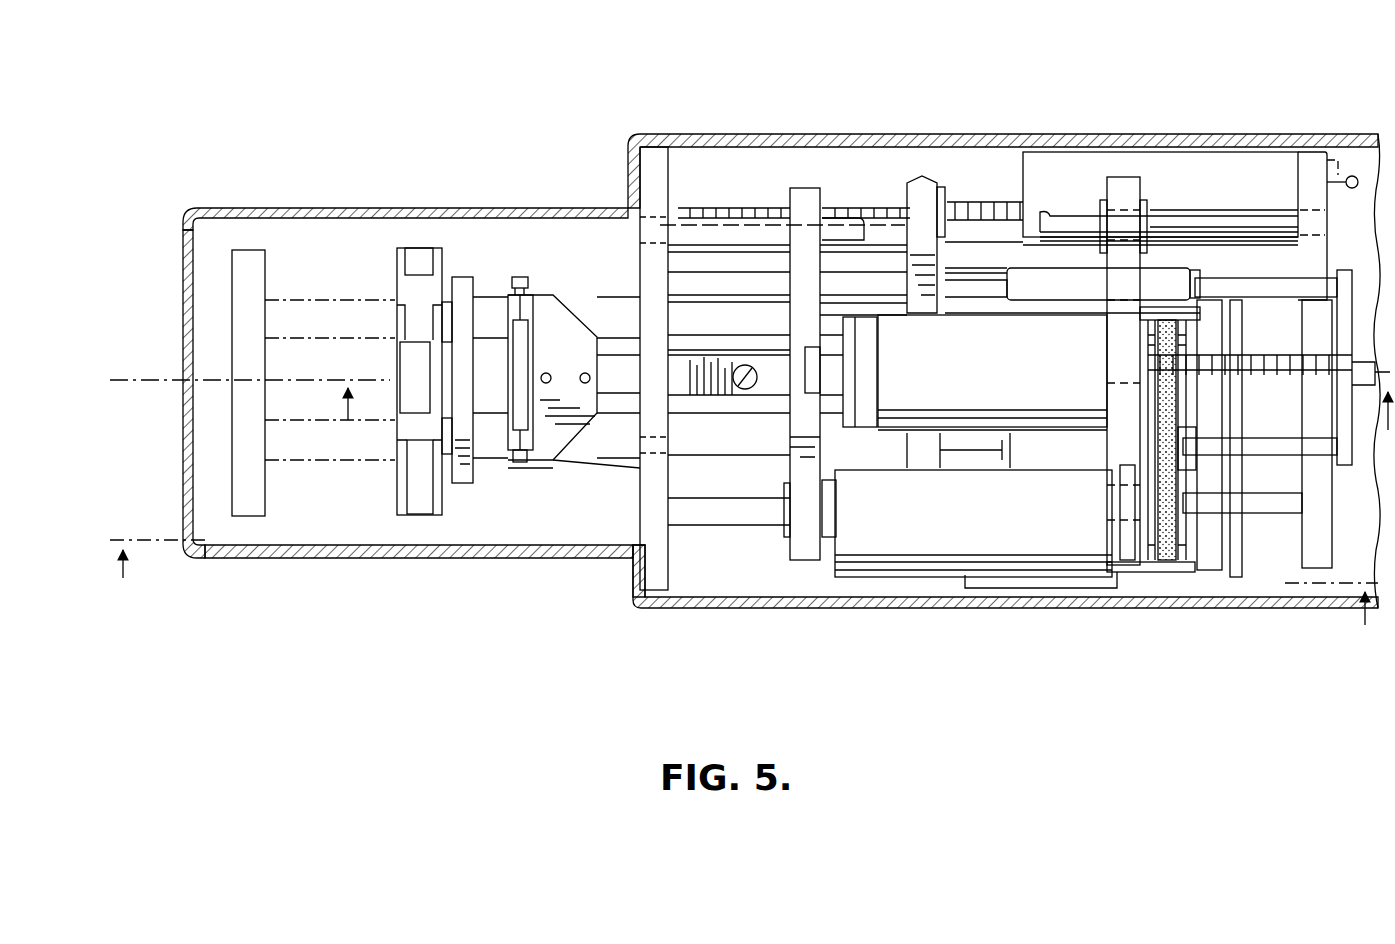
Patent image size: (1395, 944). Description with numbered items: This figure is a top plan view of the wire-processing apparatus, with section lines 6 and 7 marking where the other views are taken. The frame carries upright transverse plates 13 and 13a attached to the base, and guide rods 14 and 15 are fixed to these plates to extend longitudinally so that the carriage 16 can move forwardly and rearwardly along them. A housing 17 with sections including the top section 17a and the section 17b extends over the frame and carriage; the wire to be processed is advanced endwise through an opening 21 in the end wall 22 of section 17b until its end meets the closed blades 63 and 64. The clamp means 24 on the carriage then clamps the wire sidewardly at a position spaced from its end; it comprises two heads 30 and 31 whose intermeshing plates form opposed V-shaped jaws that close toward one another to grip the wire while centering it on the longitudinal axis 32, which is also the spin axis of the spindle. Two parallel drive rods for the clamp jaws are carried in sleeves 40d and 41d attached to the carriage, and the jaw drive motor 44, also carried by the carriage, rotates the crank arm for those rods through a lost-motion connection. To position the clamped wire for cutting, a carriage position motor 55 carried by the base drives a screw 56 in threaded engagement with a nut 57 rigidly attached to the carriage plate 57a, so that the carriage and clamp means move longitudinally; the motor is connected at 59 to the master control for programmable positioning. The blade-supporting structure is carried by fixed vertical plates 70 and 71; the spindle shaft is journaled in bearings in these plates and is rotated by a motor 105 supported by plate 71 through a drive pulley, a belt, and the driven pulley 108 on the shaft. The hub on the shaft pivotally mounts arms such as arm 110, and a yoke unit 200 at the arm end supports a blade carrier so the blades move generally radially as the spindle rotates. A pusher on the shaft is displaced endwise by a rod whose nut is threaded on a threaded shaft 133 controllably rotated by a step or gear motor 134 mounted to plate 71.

The section line 6- 6 is at (744, 604).
The section line 7- 7 is at (865, 419).
The upright transverse plate 13 is at (640, 578).
The upright transverse plate 13a is at (1337, 152).
The guide rod 14 is at (706, 228).
The guide rod 15 is at (703, 510).
The carriage 16 is at (793, 568).
The housing 17 is at (1052, 112).
The housing section 17a is at (780, 134).
The housing section 17b is at (331, 208).
The opening 21 is at (183, 395).
The end wall 22 is at (183, 274).
The clamp means 24 is at (245, 246).
The head 30 is at (418, 248).
The head 31 is at (425, 500).
The longitudinal axis 32 is at (150, 368).
The sleeve 40d is at (490, 300).
The sleeve 41d is at (592, 455).
The motor 44 is at (993, 580).
The carriage position motor 55 is at (1188, 158).
The screw 56 is at (975, 202).
The nut 57 is at (917, 215).
The carriage plate 57a is at (922, 305).
The connection 59 is at (1330, 187).
The blade 63 is at (510, 390).
The blade 64 is at (520, 286).
The fixed vertical plate 70 is at (813, 548).
The fixed vertical plate 71 is at (1118, 340).
The motor 105 is at (985, 521).
The driven pulley 108 is at (1165, 555).
The arm 110 is at (703, 398).
The threaded shaft 133 is at (1270, 360).
The step or gear motor 134 is at (975, 391).
The yoke unit 200 is at (582, 325).